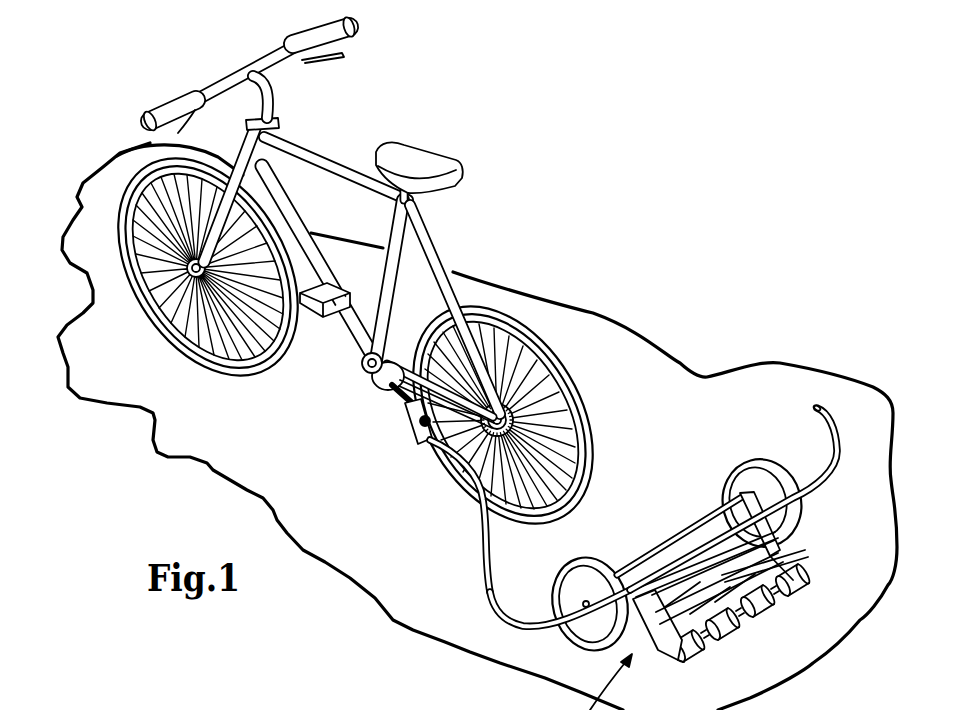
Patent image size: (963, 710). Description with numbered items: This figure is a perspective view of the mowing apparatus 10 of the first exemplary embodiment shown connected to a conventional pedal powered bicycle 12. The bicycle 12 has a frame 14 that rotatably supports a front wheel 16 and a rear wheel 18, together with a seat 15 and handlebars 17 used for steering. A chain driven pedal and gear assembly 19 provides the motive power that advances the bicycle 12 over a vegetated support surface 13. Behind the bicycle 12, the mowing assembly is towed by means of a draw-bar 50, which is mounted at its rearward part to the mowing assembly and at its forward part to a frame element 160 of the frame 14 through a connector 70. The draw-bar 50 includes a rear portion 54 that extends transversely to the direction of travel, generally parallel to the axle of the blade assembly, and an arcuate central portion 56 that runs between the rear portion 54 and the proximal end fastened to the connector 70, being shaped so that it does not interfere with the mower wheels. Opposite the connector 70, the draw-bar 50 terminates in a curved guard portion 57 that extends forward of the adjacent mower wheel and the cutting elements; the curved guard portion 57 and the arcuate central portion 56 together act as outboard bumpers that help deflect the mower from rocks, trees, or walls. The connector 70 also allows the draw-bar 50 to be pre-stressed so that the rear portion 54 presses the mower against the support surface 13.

The mowing apparatus 10 is at (663, 393).
The bicycle 12 is at (487, 195).
The vegetated support surface 13 is at (240, 455).
The frame 14 is at (303, 143).
The seat 15 is at (430, 155).
The front wheel 16 is at (138, 168).
The handlebars 17 is at (263, 52).
The rear wheel 18 is at (545, 345).
The chain driven pedal and gear assembly 19 is at (369, 389).
The draw-bar 50 is at (482, 549).
The rear portion 54 is at (762, 606).
The arcuate central portion 56 is at (507, 620).
The curved guard portion 57 is at (815, 420).
The connector 70 is at (405, 438).
The frame element 160 is at (345, 709).